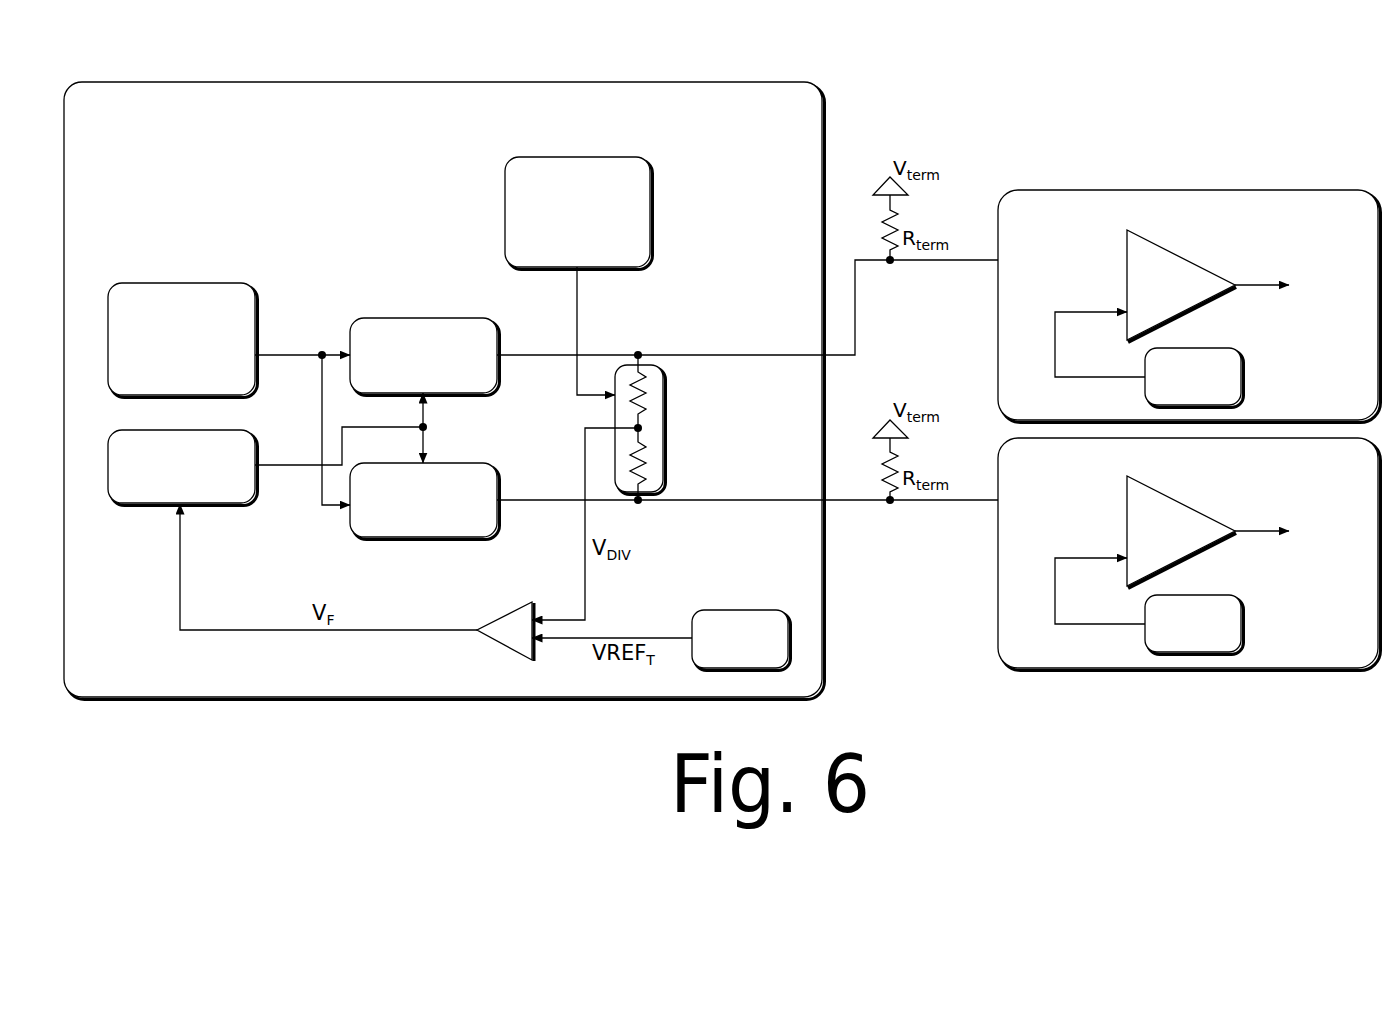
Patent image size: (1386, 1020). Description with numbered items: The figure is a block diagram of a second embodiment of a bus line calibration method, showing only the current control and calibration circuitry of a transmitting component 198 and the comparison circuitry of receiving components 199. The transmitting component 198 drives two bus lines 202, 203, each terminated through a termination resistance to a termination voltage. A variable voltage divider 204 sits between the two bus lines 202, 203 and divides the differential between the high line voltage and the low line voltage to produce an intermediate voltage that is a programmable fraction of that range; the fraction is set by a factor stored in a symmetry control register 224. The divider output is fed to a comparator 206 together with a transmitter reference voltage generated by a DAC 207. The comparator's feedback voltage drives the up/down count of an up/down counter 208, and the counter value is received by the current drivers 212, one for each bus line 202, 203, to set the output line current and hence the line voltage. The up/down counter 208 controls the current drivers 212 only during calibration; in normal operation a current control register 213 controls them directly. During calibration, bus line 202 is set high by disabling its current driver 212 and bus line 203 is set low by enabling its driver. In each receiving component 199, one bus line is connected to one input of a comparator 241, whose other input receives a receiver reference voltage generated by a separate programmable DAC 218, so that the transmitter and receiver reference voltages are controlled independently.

The transmitting component 198 is at (280, 90).
The receiving component 199 is at (1078, 195).
The bus line 202 is at (684, 355).
The bus line 203 is at (685, 502).
The variable voltage divider 204 is at (676, 427).
The comparator 206 is at (505, 636).
The DAC 207 is at (710, 622).
The up/down counter 208 is at (207, 437).
The current driver 212 is at (368, 336).
The current control register 213 is at (200, 290).
The DAC 218 is at (1225, 364).
The symmetry control register 224 is at (612, 165).
The comparator 241 is at (1175, 270).